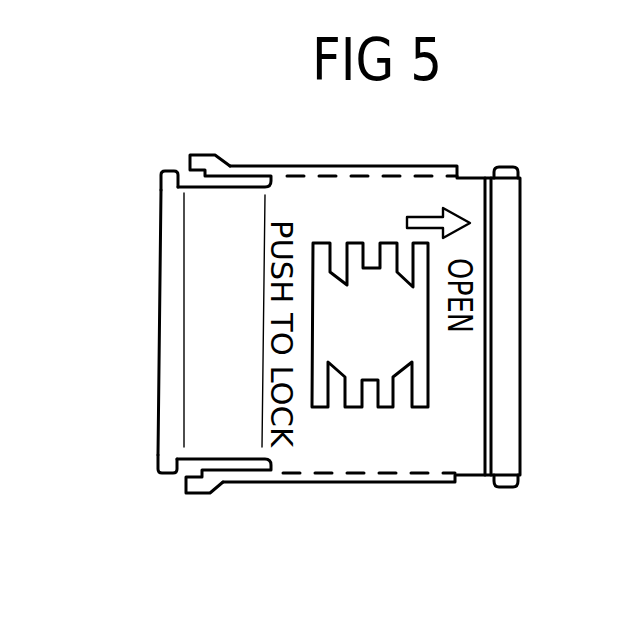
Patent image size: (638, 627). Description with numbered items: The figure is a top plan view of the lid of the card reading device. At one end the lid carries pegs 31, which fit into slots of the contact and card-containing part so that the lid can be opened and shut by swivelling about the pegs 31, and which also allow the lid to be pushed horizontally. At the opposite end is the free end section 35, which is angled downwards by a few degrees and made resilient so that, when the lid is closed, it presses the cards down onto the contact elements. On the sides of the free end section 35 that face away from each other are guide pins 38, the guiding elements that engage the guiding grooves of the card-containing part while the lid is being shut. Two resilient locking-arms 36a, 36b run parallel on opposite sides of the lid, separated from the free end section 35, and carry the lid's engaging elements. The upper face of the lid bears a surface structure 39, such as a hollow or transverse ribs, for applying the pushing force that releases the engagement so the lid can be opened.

The pegs 31 is at (508, 168).
The free end section 35 is at (210, 317).
The resilient locking-arm 36a is at (245, 166).
The resilient locking-arm 36b is at (240, 482).
The guide pins 38 is at (172, 170).
The surface structure 39 is at (385, 340).